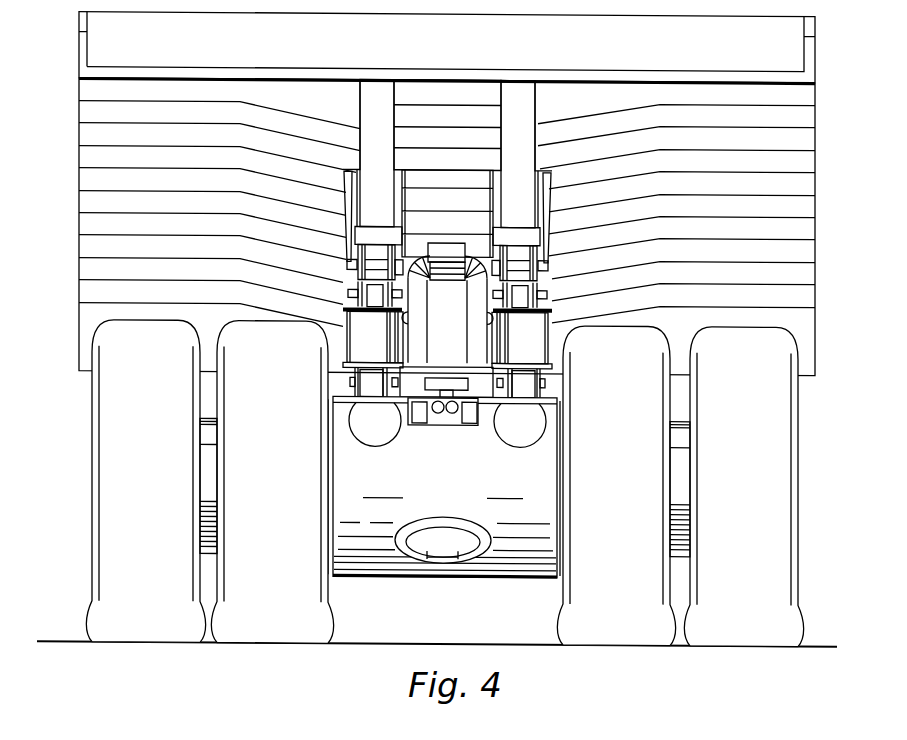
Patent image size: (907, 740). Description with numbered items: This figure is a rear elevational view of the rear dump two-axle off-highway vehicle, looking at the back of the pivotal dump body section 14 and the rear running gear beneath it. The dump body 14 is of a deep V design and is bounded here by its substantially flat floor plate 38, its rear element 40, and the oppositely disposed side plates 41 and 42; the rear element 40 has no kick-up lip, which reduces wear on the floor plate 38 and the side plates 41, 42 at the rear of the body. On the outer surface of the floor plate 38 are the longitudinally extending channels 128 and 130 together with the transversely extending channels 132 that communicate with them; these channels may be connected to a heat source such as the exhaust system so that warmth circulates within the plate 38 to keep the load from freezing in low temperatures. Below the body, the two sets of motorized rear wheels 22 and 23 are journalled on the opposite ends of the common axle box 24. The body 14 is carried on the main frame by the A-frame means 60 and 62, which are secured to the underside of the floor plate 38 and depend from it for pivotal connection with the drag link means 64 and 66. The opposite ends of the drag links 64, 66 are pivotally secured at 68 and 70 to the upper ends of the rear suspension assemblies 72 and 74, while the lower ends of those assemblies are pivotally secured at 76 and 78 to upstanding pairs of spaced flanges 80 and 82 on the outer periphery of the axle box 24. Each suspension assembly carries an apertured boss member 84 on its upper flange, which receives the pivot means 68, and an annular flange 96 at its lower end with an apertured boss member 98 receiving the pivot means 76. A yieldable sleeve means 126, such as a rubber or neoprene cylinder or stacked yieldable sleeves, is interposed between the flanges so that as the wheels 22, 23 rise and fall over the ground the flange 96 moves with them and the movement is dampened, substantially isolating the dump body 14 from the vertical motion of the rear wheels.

The dump body section 14 is at (803, 181).
The rear wheels 22 is at (138, 623).
The rear wheels 23 is at (615, 624).
The axle box 24 is at (510, 553).
The floor plate 38 is at (773, 272).
The rear element 40 is at (800, 73).
The side plate 41 is at (818, 36).
The side plate 42 is at (83, 40).
The A-frame means 60 is at (345, 217).
The A-frame means 62 is at (551, 220).
The drag link means 64 is at (350, 291).
The drag link means 66 is at (541, 287).
The pivot means 68 is at (352, 287).
The pivot means 70 is at (545, 300).
The rear suspension assembly 72 is at (356, 379).
The rear suspension assembly 74 is at (518, 349).
The pivot means 76 is at (350, 405).
The pivot means 78 is at (544, 384).
The upstanding flanges 80 is at (375, 425).
The upstanding flanges 82 is at (493, 310).
The apertured boss member 84 is at (360, 352).
The annular flange 96 is at (500, 358).
The apertured boss member 98 is at (334, 420).
The yieldable sleeve means 126 is at (552, 350).
The longitudinally extending channel 128 is at (527, 123).
The longitudinally extending channel 130 is at (368, 123).
The transversely extending channels 132 is at (104, 221).